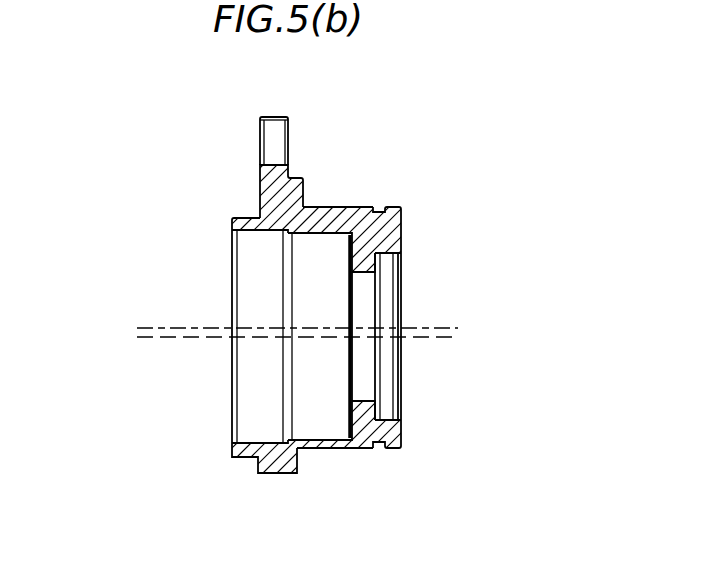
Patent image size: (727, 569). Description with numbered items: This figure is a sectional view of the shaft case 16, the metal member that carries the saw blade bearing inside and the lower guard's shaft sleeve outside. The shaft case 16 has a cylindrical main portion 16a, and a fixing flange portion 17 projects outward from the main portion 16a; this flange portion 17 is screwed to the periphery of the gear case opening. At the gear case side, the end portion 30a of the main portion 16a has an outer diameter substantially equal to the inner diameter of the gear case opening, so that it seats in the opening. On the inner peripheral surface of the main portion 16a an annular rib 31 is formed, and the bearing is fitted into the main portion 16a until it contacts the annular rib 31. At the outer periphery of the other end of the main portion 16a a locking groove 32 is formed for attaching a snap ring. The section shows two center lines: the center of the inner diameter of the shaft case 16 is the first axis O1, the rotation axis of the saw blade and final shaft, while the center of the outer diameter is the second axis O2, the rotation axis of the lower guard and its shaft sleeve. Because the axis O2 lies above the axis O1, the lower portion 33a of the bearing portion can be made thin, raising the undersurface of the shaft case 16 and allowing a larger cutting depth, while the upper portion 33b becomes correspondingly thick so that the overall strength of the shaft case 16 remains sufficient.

The shaft case 16 is at (255, 165).
The fixing flange portion 17 is at (290, 177).
The end portion on the gear case side 30a is at (250, 225).
The upper portion 33b is at (328, 208).
The main portion 16a is at (358, 208).
The locking groove 32 is at (388, 209).
The lower portion 33a is at (332, 447).
The annular rib 31 is at (378, 267).
The first axis O1 is at (432, 338).
The second axis O2 is at (437, 327).